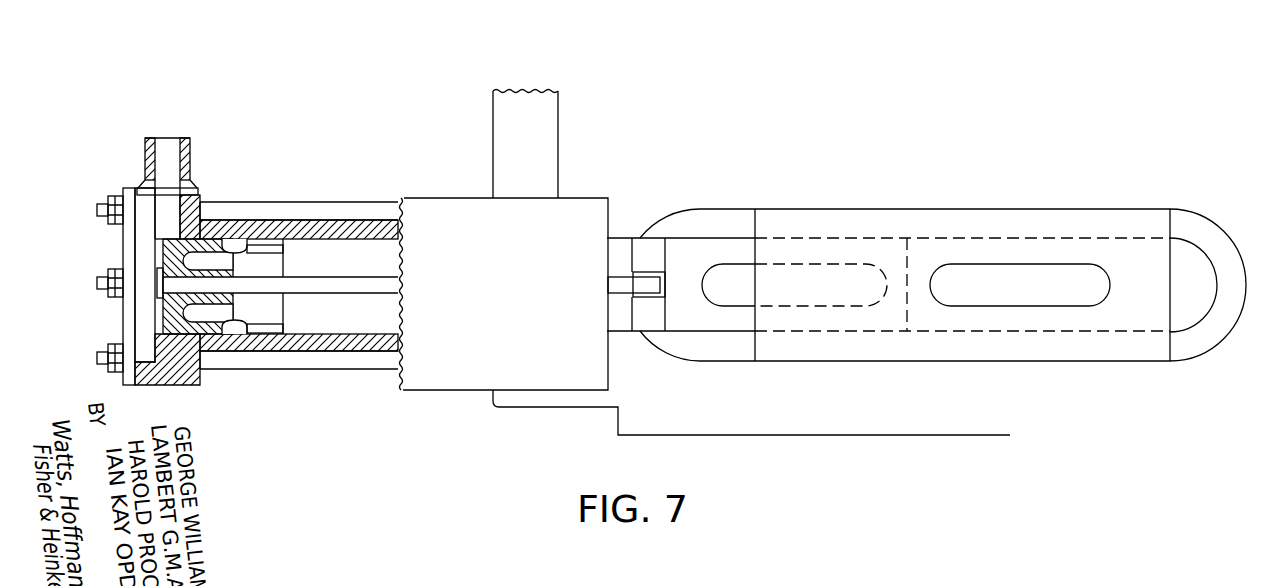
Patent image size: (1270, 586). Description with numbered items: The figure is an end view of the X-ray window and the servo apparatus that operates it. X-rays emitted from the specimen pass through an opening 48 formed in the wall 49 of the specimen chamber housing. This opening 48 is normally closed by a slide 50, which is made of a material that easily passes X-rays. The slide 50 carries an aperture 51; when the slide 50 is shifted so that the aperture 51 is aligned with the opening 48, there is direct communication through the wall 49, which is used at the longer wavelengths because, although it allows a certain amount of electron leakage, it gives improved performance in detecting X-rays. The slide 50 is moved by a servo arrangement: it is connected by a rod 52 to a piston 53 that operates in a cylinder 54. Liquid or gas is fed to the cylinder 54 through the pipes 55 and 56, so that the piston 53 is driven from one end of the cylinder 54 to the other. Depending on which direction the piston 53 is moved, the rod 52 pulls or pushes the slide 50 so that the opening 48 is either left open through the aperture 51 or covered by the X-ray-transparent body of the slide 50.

The opening 48 is at (948, 282).
The wall 49 is at (1055, 227).
The slide 50 is at (730, 238).
The aperture 51 is at (706, 268).
The rod 52 is at (335, 278).
The piston 53 is at (207, 250).
The cylinder 54 is at (317, 228).
The pipe 55 is at (170, 138).
The pipe 56 is at (524, 95).